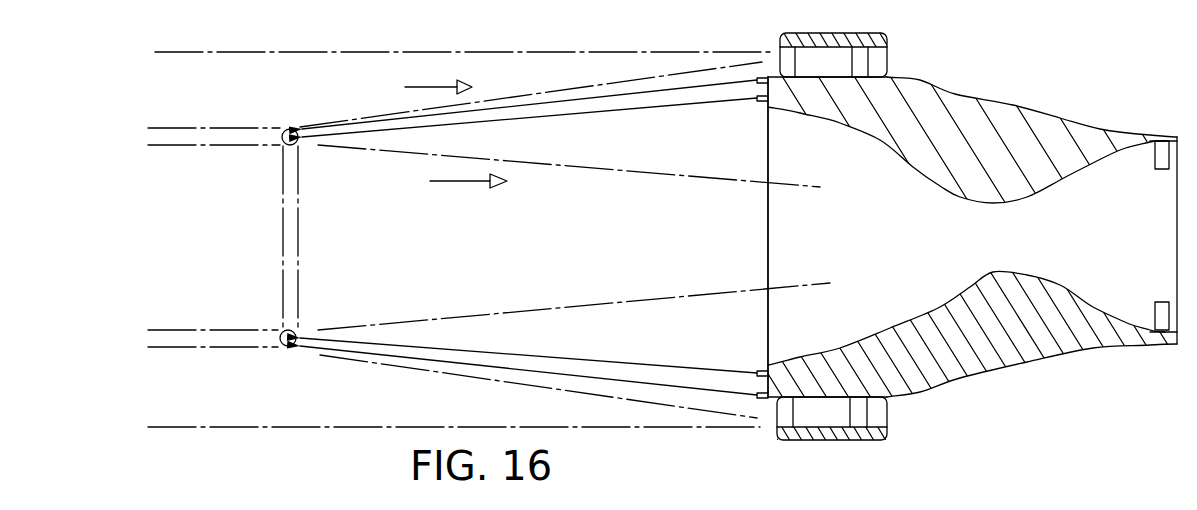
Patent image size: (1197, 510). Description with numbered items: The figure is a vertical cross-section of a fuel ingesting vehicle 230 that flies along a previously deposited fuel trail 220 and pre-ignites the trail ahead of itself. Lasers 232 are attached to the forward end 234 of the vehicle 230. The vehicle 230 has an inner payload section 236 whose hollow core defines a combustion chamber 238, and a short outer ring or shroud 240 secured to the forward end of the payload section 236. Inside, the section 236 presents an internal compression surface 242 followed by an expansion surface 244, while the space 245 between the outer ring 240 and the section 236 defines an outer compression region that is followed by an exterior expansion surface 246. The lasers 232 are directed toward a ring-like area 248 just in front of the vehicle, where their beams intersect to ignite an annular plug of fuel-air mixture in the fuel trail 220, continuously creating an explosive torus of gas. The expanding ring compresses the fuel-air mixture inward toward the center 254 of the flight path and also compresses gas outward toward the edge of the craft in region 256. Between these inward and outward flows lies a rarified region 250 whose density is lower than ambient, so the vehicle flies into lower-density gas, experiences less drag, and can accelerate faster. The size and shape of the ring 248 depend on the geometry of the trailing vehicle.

The fuel trail 220 is at (237, 146).
The fuel ingesting vehicle 230 is at (1019, 98).
The lasers 232 is at (757, 99).
The forward end 234 is at (768, 303).
The inner payload section 236 is at (1054, 148).
The combustion chamber 238 is at (1024, 250).
The outer ring or shroud 240 is at (815, 34).
The internal compression surface 242 is at (890, 333).
The expansion surface 244 is at (1083, 302).
The space between outer ring and payload section 245 is at (882, 63).
The exterior expansion surface 246 is at (1027, 358).
The ring-like area 248 is at (282, 332).
The rarified region 250 is at (623, 154).
The center of the flight path 254 is at (460, 183).
The region toward the edge of the craft 256 is at (423, 86).